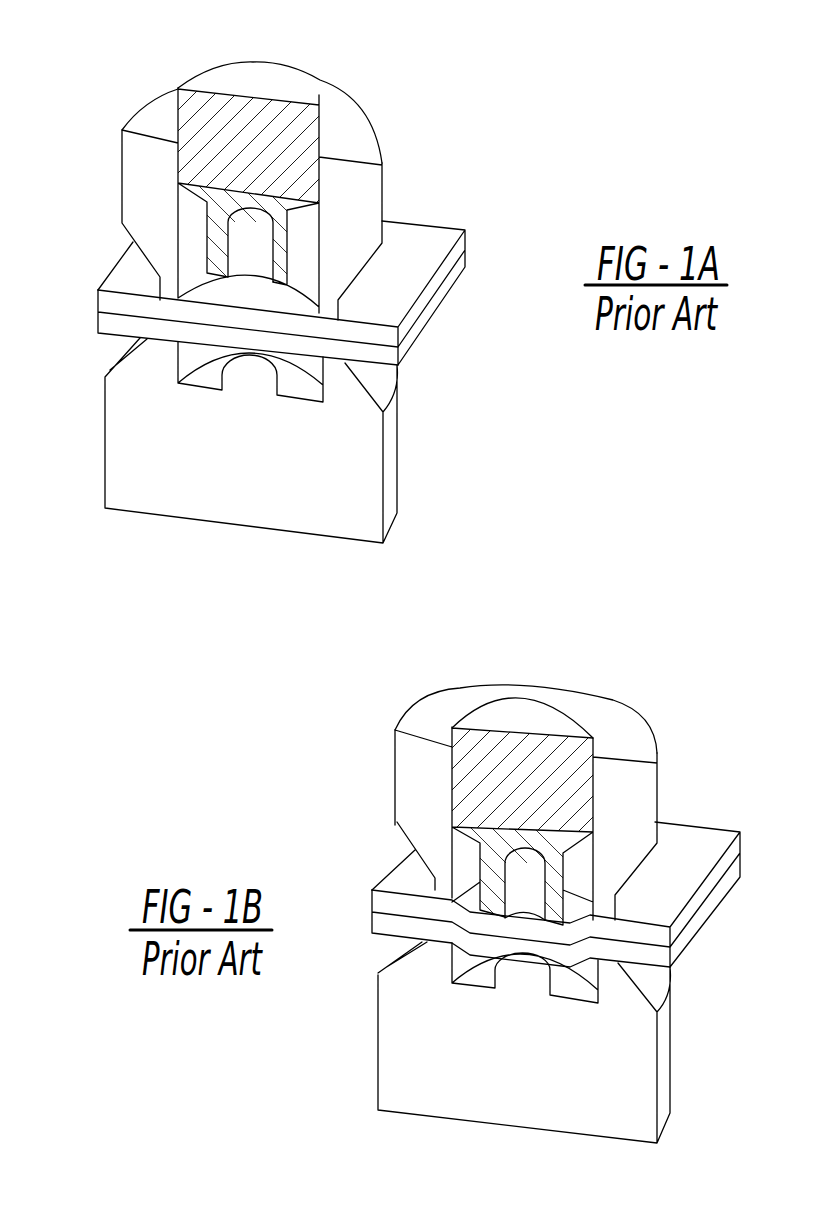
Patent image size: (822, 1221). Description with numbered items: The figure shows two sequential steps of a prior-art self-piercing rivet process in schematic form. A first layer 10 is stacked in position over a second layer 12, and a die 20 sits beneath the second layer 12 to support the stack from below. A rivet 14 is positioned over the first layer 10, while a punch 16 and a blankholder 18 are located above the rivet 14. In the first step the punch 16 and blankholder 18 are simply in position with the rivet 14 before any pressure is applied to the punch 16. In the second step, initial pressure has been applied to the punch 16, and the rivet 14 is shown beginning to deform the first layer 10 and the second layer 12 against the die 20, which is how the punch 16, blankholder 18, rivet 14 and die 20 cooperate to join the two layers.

In FIG. 1A, the first layer 10 is at (413, 247).
In FIG. 1B, the first layer 10 is at (688, 845).
In FIG. 1A, the second layer 12 is at (108, 325).
In FIG. 1B, the second layer 12 is at (713, 903).
In FIG. 1A, the rivet 14 is at (218, 212).
In FIG. 1B, the rivet 14 is at (500, 847).
In FIG. 1A, the punch 16 is at (278, 75).
In FIG. 1B, the punch 16 is at (527, 715).
In FIG. 1A, the blankholder 18 is at (352, 140).
In FIG. 1B, the blankholder 18 is at (618, 737).
In FIG. 1A, the die 20 is at (233, 468).
In FIG. 1B, the die 20 is at (512, 1097).